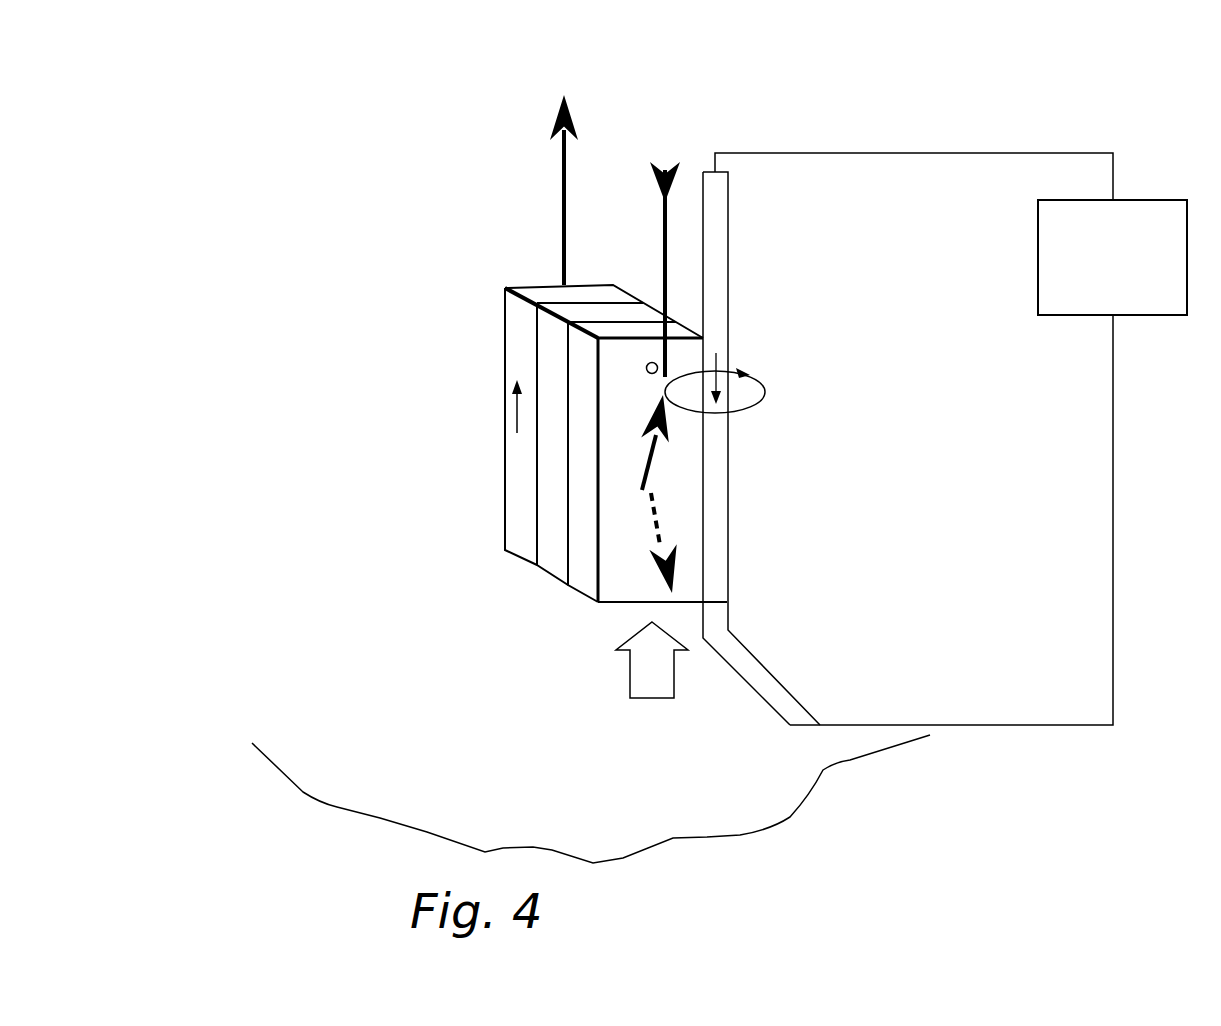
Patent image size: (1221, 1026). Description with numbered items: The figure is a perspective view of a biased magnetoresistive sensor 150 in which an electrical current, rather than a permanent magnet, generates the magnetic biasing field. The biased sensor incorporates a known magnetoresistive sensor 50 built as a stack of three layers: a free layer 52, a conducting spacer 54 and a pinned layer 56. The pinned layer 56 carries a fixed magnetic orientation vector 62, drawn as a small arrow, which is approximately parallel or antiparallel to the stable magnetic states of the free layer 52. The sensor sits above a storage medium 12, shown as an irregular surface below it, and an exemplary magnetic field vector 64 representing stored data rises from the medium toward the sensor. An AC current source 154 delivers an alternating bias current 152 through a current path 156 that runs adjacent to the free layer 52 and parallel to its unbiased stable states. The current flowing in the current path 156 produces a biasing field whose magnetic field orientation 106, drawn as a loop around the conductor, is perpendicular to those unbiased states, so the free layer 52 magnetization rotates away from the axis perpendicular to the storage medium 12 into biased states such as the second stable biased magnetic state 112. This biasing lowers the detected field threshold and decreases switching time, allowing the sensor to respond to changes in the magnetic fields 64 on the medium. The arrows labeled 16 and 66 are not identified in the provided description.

The storage medium 12 is at (305, 795).
The write magnetic field 16 is at (668, 422).
The magnetoresistive sensor 50 is at (517, 258).
The free layer 52 is at (585, 578).
The conducting spacer 54 is at (548, 343).
The pinned layer 56 is at (520, 315).
The magnetic orientation vector 62 is at (517, 413).
The magnetic field vector 64 is at (675, 668).
The current flow direction 66 is at (660, 164).
The magnetic field orientation 106 is at (765, 392).
The second stable biased magnetic state 112 is at (678, 567).
The biased magnetoresistive sensor 150 is at (564, 95).
The alternating bias current 152 is at (974, 124).
The AC current source 154 is at (1143, 200).
The current path 156 is at (728, 285).